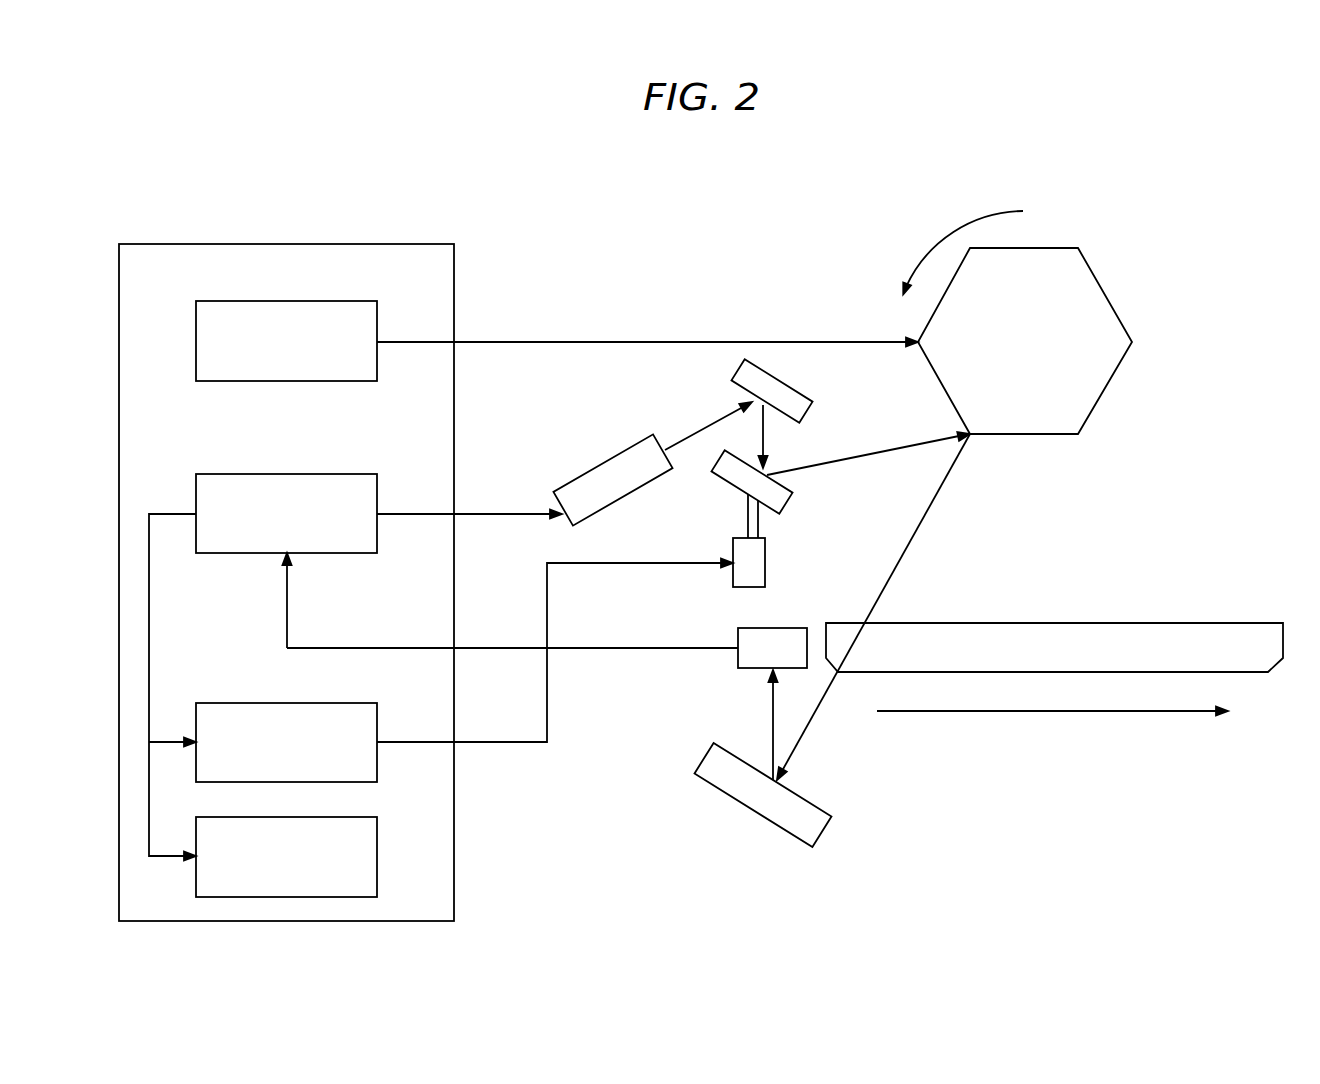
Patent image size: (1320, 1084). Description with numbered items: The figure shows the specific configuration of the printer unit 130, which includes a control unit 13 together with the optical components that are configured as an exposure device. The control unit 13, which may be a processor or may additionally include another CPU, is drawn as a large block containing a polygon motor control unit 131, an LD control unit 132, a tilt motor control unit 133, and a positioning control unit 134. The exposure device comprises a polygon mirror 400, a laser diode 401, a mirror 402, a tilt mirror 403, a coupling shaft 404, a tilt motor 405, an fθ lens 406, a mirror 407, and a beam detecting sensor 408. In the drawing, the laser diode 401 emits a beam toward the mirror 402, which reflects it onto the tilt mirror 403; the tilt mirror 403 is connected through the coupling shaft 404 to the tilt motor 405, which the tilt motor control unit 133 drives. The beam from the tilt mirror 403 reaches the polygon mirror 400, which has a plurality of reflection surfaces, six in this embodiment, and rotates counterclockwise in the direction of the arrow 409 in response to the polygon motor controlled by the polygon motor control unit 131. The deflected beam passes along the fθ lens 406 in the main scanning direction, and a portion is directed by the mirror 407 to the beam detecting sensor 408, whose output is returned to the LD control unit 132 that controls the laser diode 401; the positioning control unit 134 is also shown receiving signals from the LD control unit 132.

The control unit 13 is at (386, 244).
The polygon motor control unit 131 is at (337, 301).
The LD control unit 132 is at (337, 474).
The tilt motor control unit 133 is at (337, 703).
The positioning control unit 134 is at (337, 817).
The printer unit 130 is at (1194, 218).
The polygon mirror 400 is at (1047, 248).
The laser diode (LD) 401 is at (627, 450).
The mirror 402 is at (785, 373).
The tilt mirror 403 is at (793, 483).
The coupling shaft 404 is at (747, 520).
The tilt motor 405 is at (767, 563).
The fθ lens 406 is at (1193, 623).
The mirror 407 is at (813, 802).
The beam detecting (BD) sensor 408 is at (772, 627).
The arrow 409 is at (980, 217).